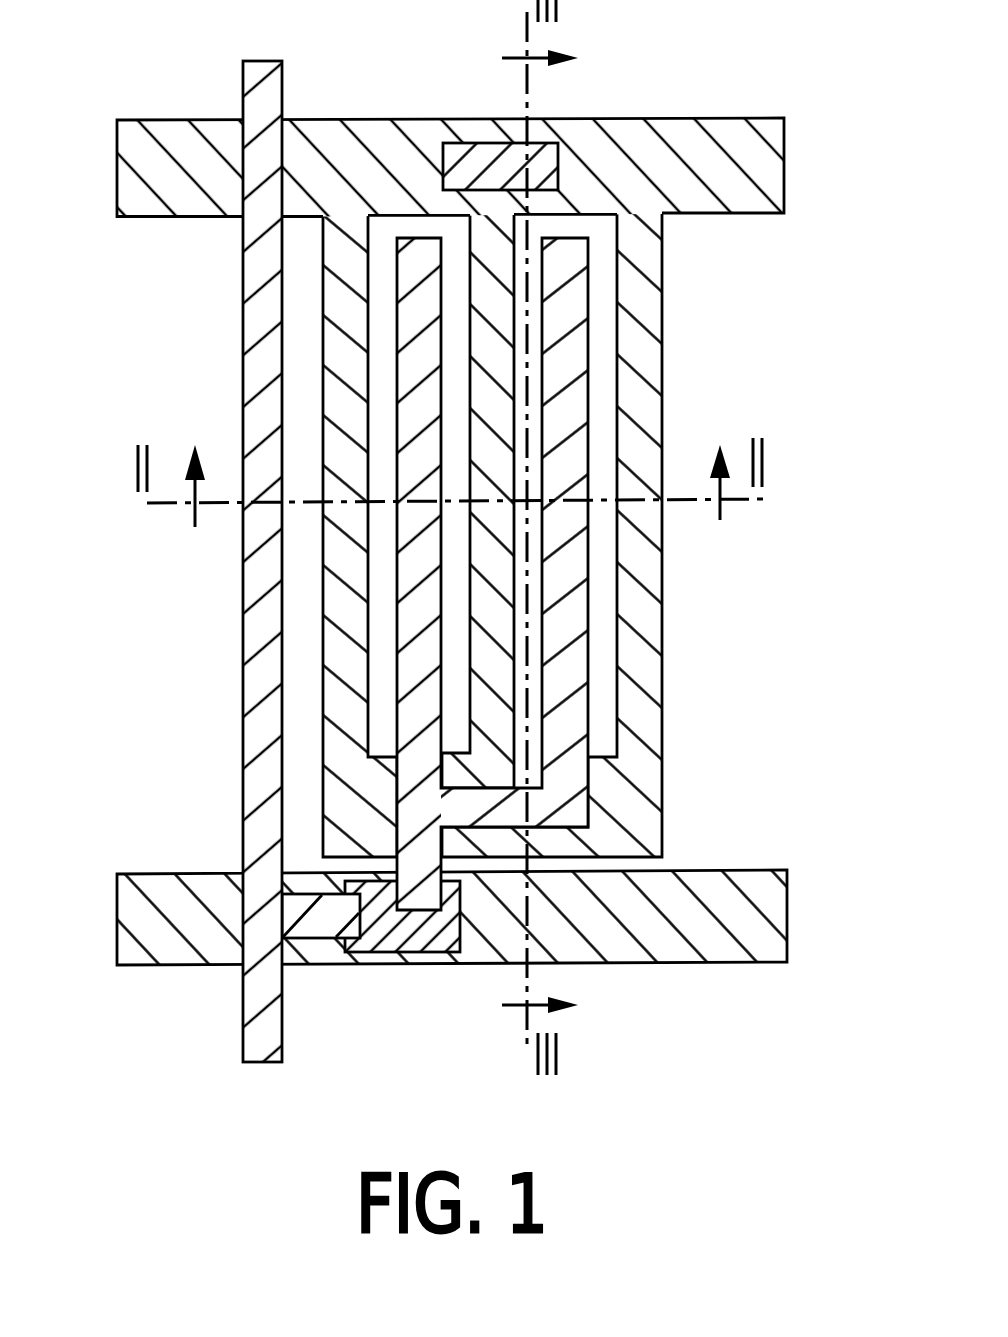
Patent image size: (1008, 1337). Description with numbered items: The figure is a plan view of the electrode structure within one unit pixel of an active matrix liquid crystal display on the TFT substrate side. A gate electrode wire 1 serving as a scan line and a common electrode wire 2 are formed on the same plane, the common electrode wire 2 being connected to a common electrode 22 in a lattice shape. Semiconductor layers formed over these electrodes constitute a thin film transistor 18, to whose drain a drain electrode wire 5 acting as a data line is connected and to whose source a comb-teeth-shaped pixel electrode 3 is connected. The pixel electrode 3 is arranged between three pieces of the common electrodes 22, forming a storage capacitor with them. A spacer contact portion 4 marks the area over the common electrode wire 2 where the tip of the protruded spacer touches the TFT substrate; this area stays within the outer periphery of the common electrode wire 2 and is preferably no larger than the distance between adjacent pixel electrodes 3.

The gate electrode wire 1 is at (768, 890).
The common electrode wire 2 is at (781, 138).
The pixel electrode 3 is at (576, 348).
The spacer contact portion 4 is at (478, 143).
The drain electrode wire 5 is at (253, 688).
The thin film transistor 18 is at (380, 947).
The common electrode 22 is at (642, 667).